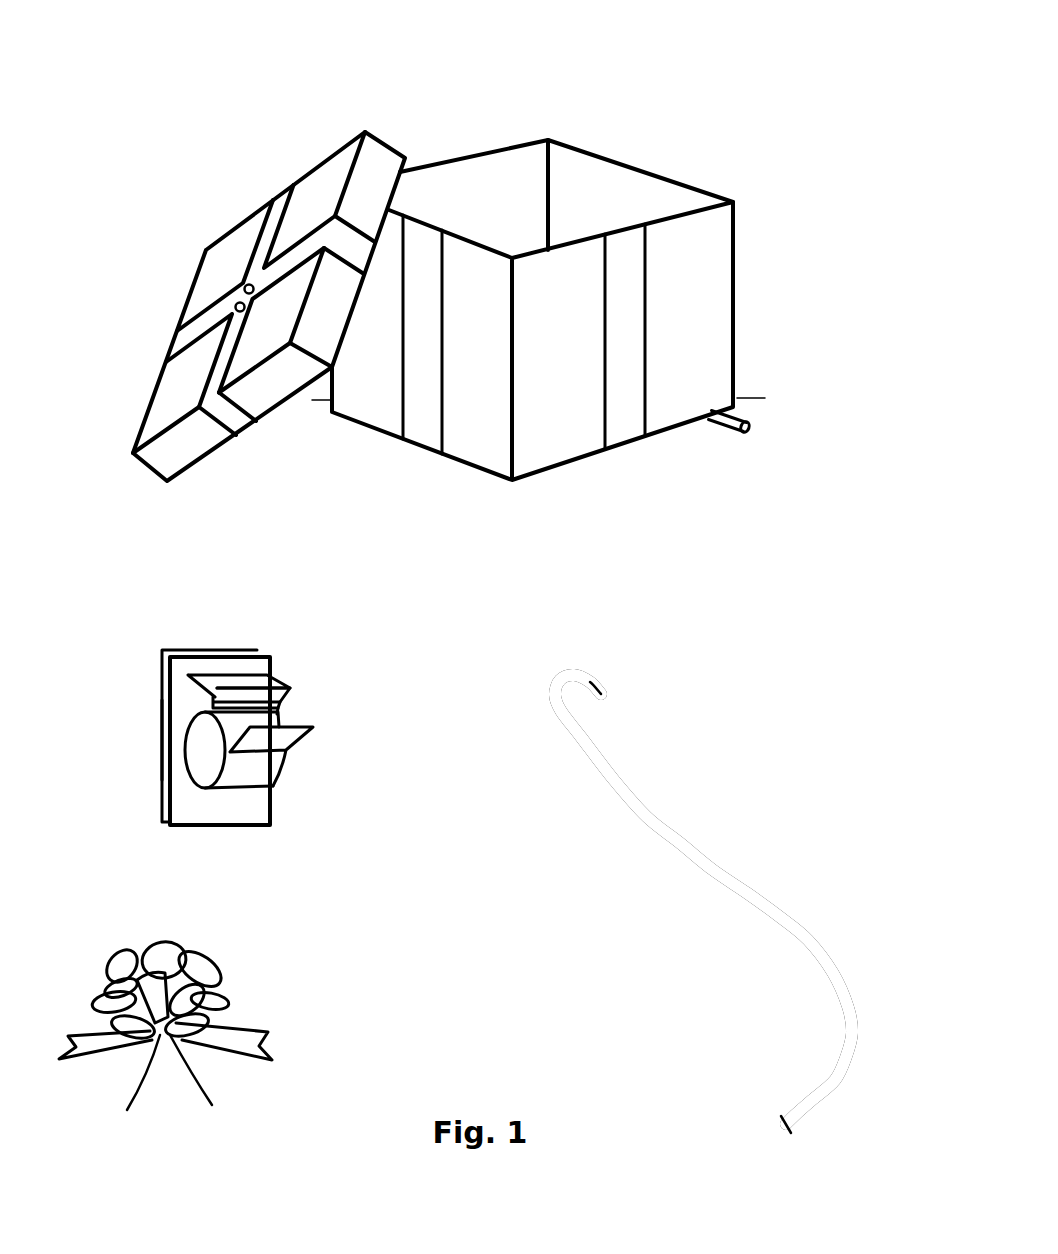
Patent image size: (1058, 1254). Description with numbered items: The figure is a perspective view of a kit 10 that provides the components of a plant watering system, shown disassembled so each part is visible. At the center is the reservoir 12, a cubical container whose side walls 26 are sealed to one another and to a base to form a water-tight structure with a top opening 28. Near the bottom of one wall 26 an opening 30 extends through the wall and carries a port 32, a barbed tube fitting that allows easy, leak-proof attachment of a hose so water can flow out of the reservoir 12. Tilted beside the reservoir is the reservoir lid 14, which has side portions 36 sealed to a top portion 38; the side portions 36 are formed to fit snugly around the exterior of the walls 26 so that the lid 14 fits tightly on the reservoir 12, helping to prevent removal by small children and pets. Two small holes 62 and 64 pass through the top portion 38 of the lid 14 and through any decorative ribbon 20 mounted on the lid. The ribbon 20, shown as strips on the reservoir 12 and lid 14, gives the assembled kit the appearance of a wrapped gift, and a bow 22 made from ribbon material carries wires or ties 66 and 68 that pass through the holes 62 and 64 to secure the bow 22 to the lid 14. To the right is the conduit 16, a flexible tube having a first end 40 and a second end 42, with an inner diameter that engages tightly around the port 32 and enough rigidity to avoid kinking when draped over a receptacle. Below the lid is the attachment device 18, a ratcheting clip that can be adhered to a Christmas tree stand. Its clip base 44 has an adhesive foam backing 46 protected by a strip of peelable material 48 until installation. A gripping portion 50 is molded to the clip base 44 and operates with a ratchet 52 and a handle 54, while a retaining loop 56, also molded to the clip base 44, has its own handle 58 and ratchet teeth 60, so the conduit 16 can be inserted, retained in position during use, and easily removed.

The kit 10 is at (280, 73).
The reservoir 12 is at (593, 310).
The reservoir lid 14 is at (252, 253).
The conduit 16 is at (718, 875).
The attachment device 18 is at (234, 717).
The ribbon 20 is at (425, 423).
The bow 22 is at (201, 1028).
The side wall 26 is at (477, 183).
The top opening 28 is at (519, 150).
The opening 30 is at (713, 414).
The port 32 is at (725, 433).
The side portions 36 is at (377, 178).
The top portion 38 is at (215, 272).
The first end 40 is at (587, 672).
The second end 42 is at (790, 1103).
The clip base 44 is at (255, 805).
The adhesive foam backing 46 is at (162, 737).
The peelable material 48 is at (165, 661).
The gripping portion 50 is at (270, 666).
The ratchet 52 is at (280, 704).
The handle 54 is at (292, 688).
The retaining loop 56 is at (262, 775).
The handle 58 is at (282, 742).
The ratchet teeth 60 is at (279, 714).
The hole 62 is at (244, 288).
The hole 64 is at (235, 305).
The wire or tie 66 is at (129, 1086).
The wire or tie 68 is at (204, 1086).